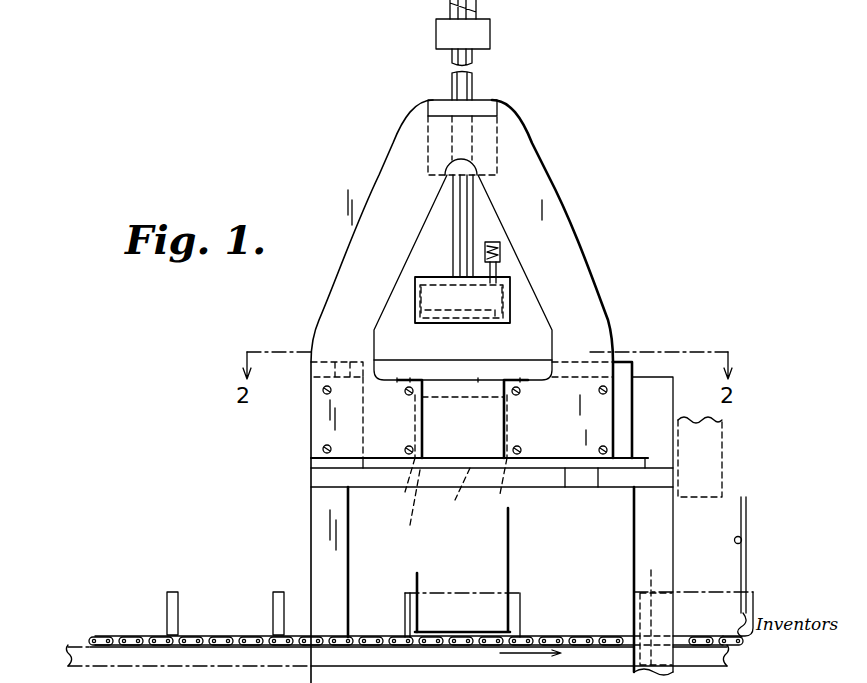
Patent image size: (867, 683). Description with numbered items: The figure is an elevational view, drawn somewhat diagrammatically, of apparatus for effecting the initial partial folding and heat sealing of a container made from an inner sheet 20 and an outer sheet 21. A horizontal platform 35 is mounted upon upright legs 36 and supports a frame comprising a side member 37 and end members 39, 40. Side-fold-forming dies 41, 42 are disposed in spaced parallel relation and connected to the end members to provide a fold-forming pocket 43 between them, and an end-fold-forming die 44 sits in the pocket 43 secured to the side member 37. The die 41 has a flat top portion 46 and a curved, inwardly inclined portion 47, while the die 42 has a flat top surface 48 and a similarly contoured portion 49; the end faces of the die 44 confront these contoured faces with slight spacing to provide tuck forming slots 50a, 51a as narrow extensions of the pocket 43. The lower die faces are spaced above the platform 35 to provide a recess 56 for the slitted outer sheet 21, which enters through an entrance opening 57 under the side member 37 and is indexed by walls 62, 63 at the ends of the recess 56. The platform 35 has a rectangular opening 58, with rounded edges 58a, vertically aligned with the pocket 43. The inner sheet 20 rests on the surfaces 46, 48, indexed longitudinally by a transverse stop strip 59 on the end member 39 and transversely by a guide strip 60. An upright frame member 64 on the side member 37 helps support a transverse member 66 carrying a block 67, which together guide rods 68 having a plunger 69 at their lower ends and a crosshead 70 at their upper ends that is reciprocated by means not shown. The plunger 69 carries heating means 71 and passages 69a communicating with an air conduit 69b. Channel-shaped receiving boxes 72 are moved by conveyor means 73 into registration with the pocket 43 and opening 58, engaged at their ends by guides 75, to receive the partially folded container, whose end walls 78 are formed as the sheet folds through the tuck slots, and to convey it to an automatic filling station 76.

The crosshead 70 is at (480, 31).
The rods 68 is at (459, 90).
The transverse member 66 is at (485, 108).
The block 67 is at (497, 162).
The upright frame member 64 is at (372, 225).
The plunger 69 is at (423, 285).
The passages 69a is at (415, 300).
The conduit 69b is at (500, 265).
The heating means 71 is at (458, 313).
The flat top portion 46 is at (363, 362).
The transverse stop strip 59 is at (311, 373).
The flat top surface 48 is at (568, 377).
The guide strip 60 is at (445, 372).
The side-fold-forming die 41 is at (397, 378).
The side member 37 is at (412, 378).
The end-fold-forming die 44 is at (478, 378).
The side-fold-forming die 42 is at (520, 378).
The tuck forming slot 50a is at (428, 419).
The tuck forming slot 51a is at (505, 421).
The curved and inwardly inclined portion 47 is at (410, 406).
The curved and inclined portion 49 is at (512, 404).
The wall 62 is at (366, 468).
The end member 39 is at (318, 466).
The horizontal platform 35 is at (320, 480).
The end member 40 is at (645, 388).
The automatic filling station 76 is at (712, 448).
The upright legs 36 is at (340, 583).
The rounded edges 58a is at (415, 470).
The rectangular opening 58 is at (412, 506).
The fold-forming pocket 43 is at (462, 488).
The entrance opening 57 is at (565, 470).
The recess 56 is at (598, 470).
The wall 63 is at (645, 462).
The receiving boxes 72 is at (512, 602).
The inner sheet 20 is at (419, 580).
The outer sheet 21 is at (508, 512).
The end wall 78 is at (475, 592).
The conveyor means 73 is at (113, 636).
The guides 75 is at (575, 636).